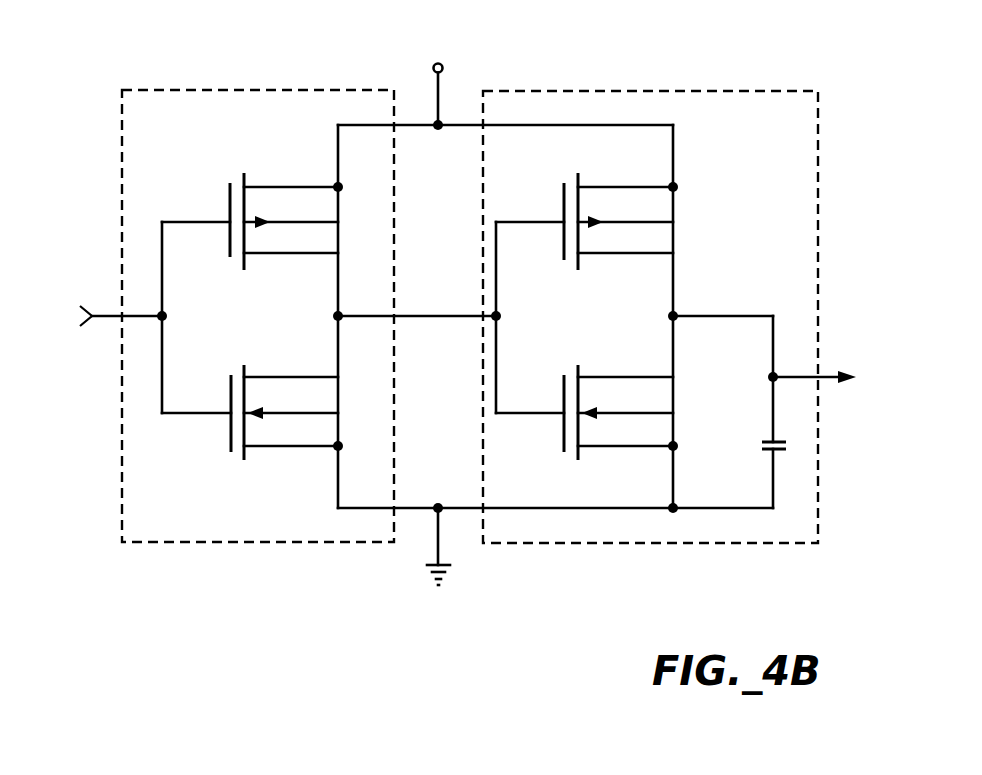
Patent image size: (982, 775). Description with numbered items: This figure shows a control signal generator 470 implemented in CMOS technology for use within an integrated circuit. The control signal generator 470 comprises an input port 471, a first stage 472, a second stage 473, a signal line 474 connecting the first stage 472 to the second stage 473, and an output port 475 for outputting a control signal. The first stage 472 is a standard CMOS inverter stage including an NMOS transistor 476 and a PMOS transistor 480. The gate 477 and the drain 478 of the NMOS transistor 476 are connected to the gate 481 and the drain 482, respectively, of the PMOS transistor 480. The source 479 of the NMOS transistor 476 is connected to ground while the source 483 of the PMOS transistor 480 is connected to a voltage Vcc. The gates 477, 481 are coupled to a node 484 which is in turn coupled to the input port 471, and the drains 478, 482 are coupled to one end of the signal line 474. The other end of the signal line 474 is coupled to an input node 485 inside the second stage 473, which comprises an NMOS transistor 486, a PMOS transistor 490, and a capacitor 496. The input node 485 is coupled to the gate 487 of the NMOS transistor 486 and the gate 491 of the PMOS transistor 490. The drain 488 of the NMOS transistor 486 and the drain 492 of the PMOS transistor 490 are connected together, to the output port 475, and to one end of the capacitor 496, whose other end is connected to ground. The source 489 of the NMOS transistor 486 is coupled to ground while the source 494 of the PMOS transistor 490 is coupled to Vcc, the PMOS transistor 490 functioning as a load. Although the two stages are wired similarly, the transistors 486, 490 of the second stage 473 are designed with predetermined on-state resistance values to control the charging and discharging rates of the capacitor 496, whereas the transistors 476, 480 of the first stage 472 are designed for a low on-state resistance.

The control signal generator 470 is at (470, 333).
The input port 471 is at (92, 304).
The first stage 472 is at (232, 90).
The second stage 473 is at (698, 90).
The signal line 474 is at (408, 312).
The output port 475 is at (843, 372).
The NMOS transistor 476 is at (270, 413).
The gate 477 is at (230, 390).
The drain 478 is at (312, 380).
The source 479 is at (331, 452).
The PMOS transistor 480 is at (250, 206).
The gate 481 is at (229, 198).
The drain 482 is at (320, 258).
The source 483 is at (311, 185).
The node 484 is at (166, 305).
The input node 485 is at (500, 305).
The NMOS transistor 486 is at (608, 413).
The gate 487 is at (563, 392).
The drain 488 is at (654, 380).
The source 489 is at (653, 452).
The PMOS transistor 490 is at (584, 213).
The gate 491 is at (562, 212).
The drain 492 is at (654, 258).
The source 494 is at (596, 187).
The capacitor 496 is at (768, 452).